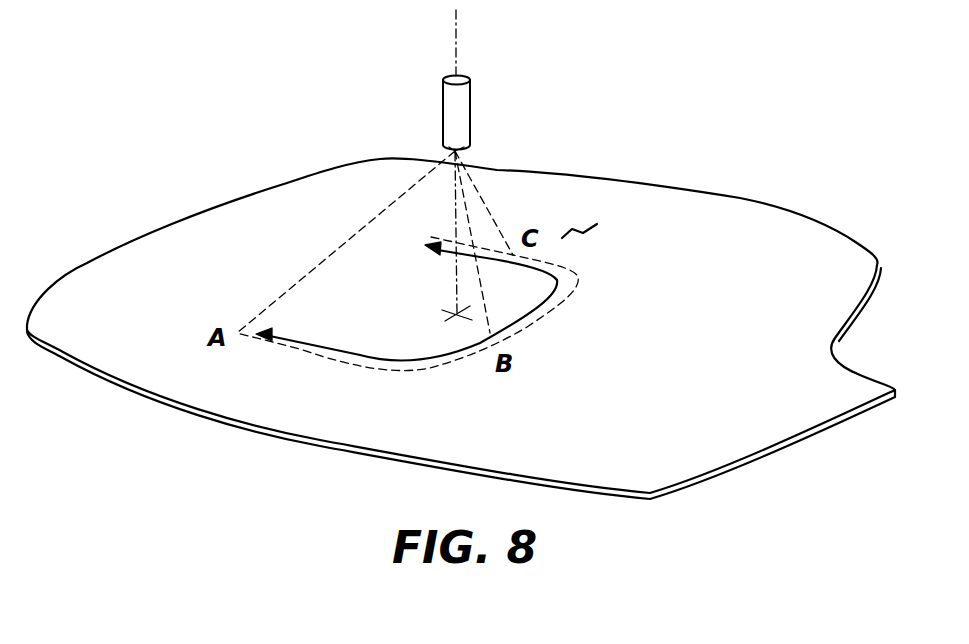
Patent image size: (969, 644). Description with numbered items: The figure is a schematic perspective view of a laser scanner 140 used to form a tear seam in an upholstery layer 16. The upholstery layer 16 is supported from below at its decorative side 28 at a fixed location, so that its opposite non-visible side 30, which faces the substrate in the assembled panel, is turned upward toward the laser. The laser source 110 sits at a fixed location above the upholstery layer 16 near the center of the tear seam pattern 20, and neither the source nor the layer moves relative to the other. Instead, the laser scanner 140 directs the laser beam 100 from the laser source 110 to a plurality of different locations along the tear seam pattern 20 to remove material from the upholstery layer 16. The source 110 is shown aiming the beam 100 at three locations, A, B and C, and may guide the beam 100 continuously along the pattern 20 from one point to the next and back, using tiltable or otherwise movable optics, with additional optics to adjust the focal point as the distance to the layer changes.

The upholstery layer 16 is at (740, 198).
The decorative side 28 is at (313, 441).
The laser source 110 is at (465, 112).
The laser scanner 140 is at (418, 99).
The laser beam 100 is at (332, 253).
The tear seam pattern 20 is at (528, 327).
The non-visible side 30 is at (574, 228).